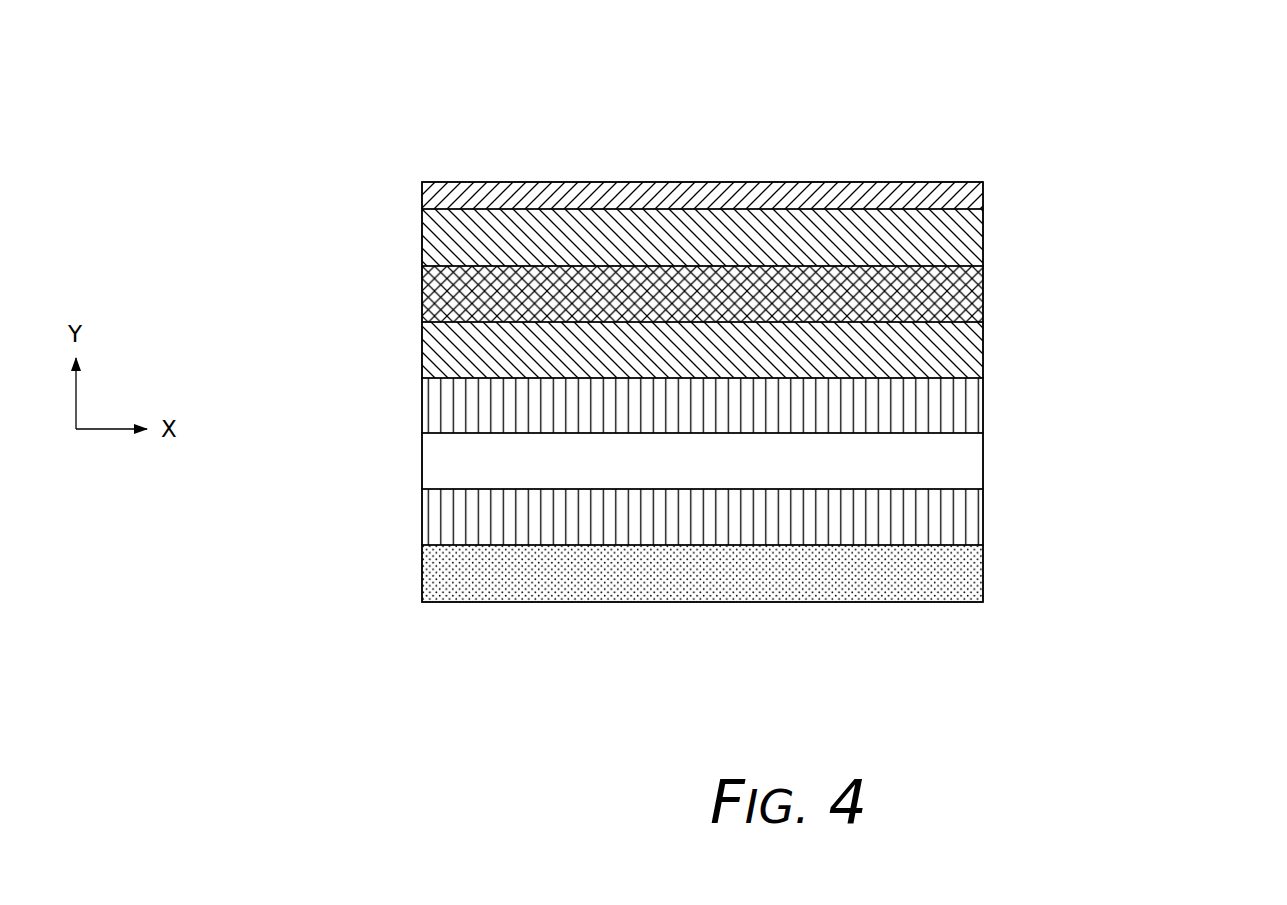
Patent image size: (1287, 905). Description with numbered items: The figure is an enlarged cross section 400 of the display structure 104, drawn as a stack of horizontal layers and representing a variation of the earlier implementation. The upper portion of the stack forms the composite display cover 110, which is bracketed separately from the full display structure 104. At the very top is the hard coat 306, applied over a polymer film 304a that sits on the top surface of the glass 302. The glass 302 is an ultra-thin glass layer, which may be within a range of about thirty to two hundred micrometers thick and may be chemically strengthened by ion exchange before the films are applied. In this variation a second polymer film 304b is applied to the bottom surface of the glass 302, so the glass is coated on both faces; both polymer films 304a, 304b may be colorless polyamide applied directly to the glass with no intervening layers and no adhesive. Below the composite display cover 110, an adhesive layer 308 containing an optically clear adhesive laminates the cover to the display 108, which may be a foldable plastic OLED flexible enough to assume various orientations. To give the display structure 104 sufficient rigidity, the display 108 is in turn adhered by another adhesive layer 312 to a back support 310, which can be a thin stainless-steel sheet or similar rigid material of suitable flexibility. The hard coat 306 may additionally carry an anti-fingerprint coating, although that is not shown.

The enlarged cross section 400 is at (427, 76).
The display structure 104 is at (421, 603).
The composite display cover 110 is at (421, 182).
The hard coat 306 is at (996, 184).
The polymer film 304a is at (996, 230).
The glass layer 302 is at (996, 285).
The polymer film 304b is at (996, 339).
The adhesive layer 308 is at (996, 411).
The display 108 is at (996, 458).
The adhesive layer 312 is at (996, 514).
The back support 310 is at (996, 570).